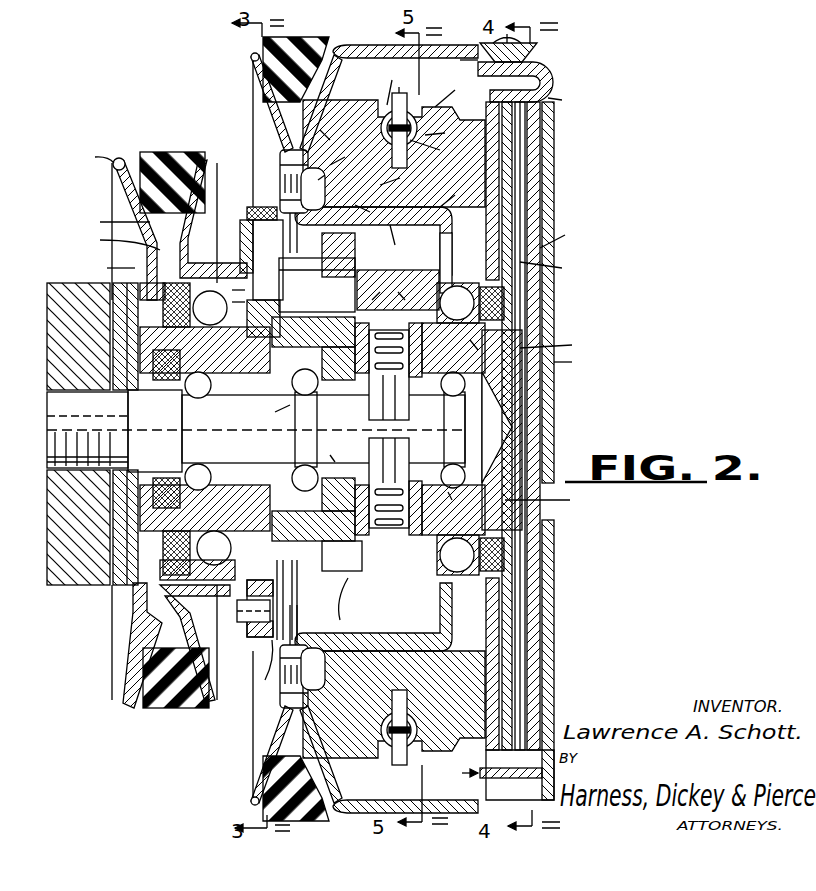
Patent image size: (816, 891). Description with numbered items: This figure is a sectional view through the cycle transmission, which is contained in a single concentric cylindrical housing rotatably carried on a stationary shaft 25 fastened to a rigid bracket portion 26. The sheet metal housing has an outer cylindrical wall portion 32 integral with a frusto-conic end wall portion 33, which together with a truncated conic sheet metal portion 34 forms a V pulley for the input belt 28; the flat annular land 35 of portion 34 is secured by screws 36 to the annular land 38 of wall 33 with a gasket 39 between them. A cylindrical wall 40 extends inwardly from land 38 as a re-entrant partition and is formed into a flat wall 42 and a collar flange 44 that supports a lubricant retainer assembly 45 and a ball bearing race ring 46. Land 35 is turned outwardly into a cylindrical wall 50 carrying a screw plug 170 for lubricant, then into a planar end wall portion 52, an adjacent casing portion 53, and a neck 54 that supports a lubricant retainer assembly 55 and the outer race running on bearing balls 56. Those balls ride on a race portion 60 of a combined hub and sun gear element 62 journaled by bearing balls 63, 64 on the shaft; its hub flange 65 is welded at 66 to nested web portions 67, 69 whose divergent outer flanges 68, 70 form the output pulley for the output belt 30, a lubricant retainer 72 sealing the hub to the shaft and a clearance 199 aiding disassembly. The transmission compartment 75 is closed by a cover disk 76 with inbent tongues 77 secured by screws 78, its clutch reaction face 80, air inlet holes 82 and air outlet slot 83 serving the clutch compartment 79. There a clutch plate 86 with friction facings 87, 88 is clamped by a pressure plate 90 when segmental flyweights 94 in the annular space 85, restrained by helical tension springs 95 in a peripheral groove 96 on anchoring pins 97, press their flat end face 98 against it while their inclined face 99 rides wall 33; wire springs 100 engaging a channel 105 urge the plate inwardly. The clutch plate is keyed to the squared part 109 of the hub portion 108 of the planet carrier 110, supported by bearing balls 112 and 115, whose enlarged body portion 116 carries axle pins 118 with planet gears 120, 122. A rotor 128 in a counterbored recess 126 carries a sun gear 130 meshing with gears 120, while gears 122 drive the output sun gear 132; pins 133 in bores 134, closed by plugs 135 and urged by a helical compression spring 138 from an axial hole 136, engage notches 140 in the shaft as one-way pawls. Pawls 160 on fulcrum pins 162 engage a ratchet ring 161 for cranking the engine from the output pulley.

The stationary shaft 25 is at (256, 429).
The bracket portion 26 is at (72, 283).
The input belt 28 is at (262, 40).
The output belt 30 is at (165, 152).
The outer cylindrical wall portion 32 is at (375, 45).
The frusto-conic end wall portion 33 is at (393, 418).
The truncated conic sheet metal portion 34 is at (300, 100).
The flat annular land 35 is at (341, 154).
The screws 36 is at (337, 171).
The annular land 38 is at (356, 202).
The gasket 39 is at (275, 745).
The cylindrical wall 40 is at (397, 175).
The flat wall 42 is at (445, 196).
The collar flange 44 is at (490, 262).
The lubricant retainer assembly 45 is at (504, 305).
The ball bearing race ring 46 is at (552, 267).
The cylindrical wall 50 is at (261, 669).
The planar end wall portion 52 is at (251, 284).
The bracket 53 is at (251, 299).
The neck 54 is at (203, 431).
The lubricant retainer assembly 55 is at (143, 262).
The bearing balls 56 is at (221, 429).
The race portion 60 is at (228, 378).
The combined hub and sun gear element 62 is at (290, 383).
The bearing balls 63 is at (290, 480).
The bearing balls 64 is at (273, 410).
The hub flange 65 is at (150, 360).
The weld 66 is at (150, 335).
The inner annular web portion 67 is at (116, 241).
The divergent outer flange 68 is at (112, 222).
The inner annular web portion 69 is at (109, 268).
The divergent outer flange 70 is at (140, 195).
The lubricant retainer 72 is at (172, 398).
The transmission compartment 75 is at (401, 236).
The cover disk 76 is at (556, 400).
The inbent tongues 77 is at (454, 61).
The screws 78 is at (540, 50).
The clutch compartment 79 is at (560, 252).
The clutch reaction face 80 is at (540, 172).
The air inlet holes 82 is at (573, 361).
The air outlet slot 83 is at (490, 785).
The annular space 85 is at (395, 73).
The clutch plate 86 is at (563, 236).
The friction facing 87 is at (565, 100).
The friction facing 88 is at (512, 120).
The pressure plate 90 is at (525, 142).
The segmental flyweights 94 is at (446, 91).
The helical tension springs 95 is at (401, 112).
The peripheral groove 96 is at (432, 758).
The anchoring pins 97 is at (380, 775).
The flat end face 98 is at (444, 133).
The inclined face 99 is at (336, 131).
The wire springs 100 is at (455, 774).
The channel 105 is at (548, 78).
The hub portion 108 is at (520, 445).
The squared part 109 is at (560, 343).
The planet carrier 110 is at (552, 499).
The bearing balls 112 is at (470, 322).
The bearing balls 115 is at (486, 350).
The enlarged body portion 116 is at (425, 280).
The axle pins 118 is at (379, 290).
The planet gear 120 is at (345, 260).
The planet gear 122 is at (317, 285).
The counterbored recess 126 is at (440, 500).
The rotor 128 is at (463, 498).
The sun gear 130 is at (331, 455).
The output sun gear 132 is at (339, 594).
The pins 133 is at (399, 429).
The bores 134 is at (360, 530).
The plugs 135 is at (374, 427).
The axial hole 136 is at (335, 392).
The helical compression spring 138 is at (357, 419).
The notches 140 is at (389, 429).
The pawls 160 is at (275, 598).
The ratchet ring 161 is at (215, 580).
The fulcrum pins 162 is at (272, 618).
The screw plug 170 is at (262, 207).
The clearance 199 is at (115, 588).